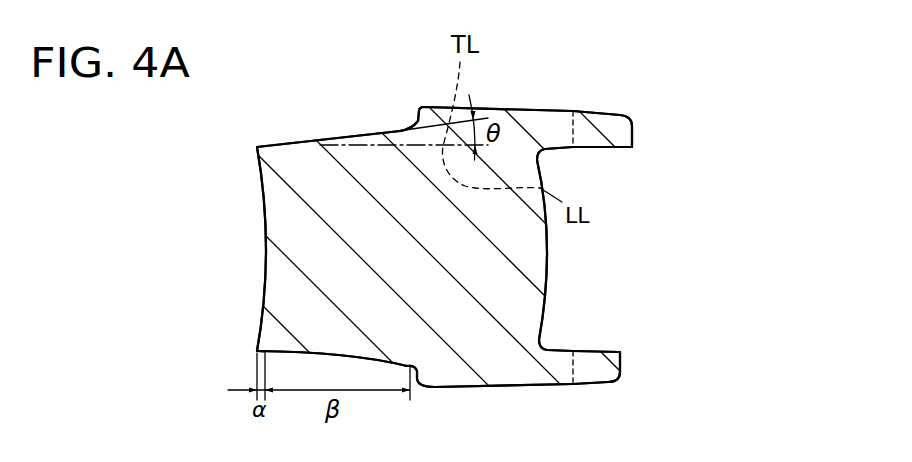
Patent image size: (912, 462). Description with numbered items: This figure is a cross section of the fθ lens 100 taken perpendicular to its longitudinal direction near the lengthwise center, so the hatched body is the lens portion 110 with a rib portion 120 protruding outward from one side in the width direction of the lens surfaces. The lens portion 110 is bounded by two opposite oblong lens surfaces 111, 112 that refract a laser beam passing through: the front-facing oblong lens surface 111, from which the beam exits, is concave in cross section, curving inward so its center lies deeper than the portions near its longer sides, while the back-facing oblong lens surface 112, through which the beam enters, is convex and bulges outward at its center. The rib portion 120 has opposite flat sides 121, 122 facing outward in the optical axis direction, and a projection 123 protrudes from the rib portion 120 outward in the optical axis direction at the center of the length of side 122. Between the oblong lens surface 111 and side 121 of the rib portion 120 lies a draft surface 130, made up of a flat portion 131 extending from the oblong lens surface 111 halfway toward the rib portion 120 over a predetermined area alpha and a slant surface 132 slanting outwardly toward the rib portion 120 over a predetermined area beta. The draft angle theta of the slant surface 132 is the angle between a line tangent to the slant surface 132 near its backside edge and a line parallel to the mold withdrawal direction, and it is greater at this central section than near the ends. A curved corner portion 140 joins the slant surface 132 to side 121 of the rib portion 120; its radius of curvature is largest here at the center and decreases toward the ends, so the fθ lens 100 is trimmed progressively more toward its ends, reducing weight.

The fθ lens 100 is at (683, 100).
The lens portion 110 is at (297, 207).
The oblong lens surface 111 is at (263, 258).
The oblong lens surface 112 is at (549, 250).
The rib portion 120 is at (543, 123).
The side 121 is at (418, 108).
The side 122 is at (578, 137).
The projection 123 is at (617, 133).
The draft surface 130 is at (338, 135).
The flat portion 131 is at (257, 357).
The slant surface 132 is at (320, 358).
The corner portion 140 is at (413, 127).